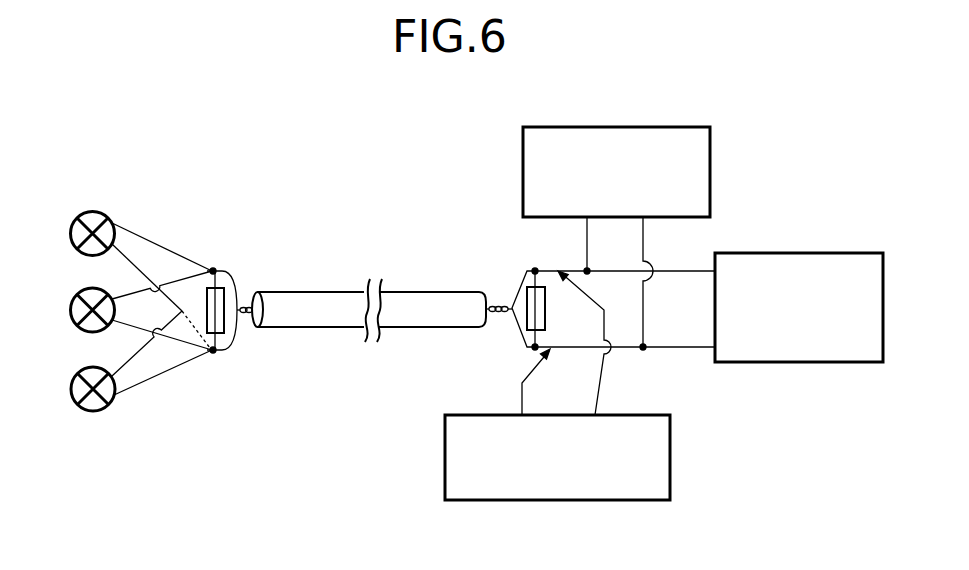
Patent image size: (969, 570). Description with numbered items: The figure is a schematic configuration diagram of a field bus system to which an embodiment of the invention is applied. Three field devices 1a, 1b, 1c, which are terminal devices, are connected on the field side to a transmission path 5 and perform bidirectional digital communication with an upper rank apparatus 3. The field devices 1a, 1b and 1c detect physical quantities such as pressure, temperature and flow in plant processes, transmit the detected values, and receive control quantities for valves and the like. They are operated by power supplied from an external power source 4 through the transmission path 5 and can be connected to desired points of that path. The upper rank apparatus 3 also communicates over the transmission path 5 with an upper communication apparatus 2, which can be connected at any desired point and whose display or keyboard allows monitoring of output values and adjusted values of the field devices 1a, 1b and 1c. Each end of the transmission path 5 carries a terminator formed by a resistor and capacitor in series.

The field device 1a is at (78, 216).
The field device 1b is at (78, 327).
The field device 1c is at (80, 407).
The upper communication apparatus 2 is at (670, 463).
The upper rank apparatus 3 is at (807, 363).
The external power source 4 is at (712, 173).
The transmission path 5 is at (295, 292).